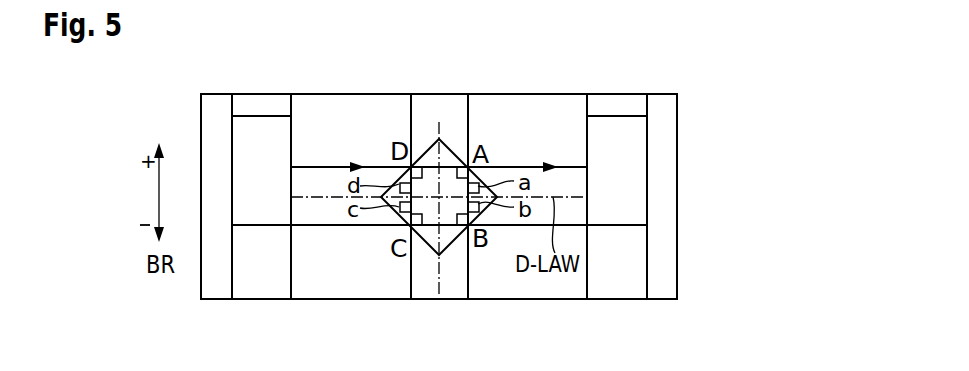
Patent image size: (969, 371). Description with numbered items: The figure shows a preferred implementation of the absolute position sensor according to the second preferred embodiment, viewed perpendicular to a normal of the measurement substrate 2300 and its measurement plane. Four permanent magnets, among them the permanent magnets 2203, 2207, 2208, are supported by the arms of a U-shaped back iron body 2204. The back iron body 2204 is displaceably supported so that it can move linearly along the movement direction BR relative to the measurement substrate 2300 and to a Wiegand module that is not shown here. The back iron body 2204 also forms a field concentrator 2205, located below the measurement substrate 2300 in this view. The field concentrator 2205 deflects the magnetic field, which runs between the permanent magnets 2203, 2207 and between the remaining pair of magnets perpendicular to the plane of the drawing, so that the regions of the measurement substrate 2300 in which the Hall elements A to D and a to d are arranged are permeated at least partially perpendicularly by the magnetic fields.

The permanent magnet 2203 is at (647, 135).
The U-shaped back iron body 2204 is at (677, 178).
The field concentrator 2205 is at (468, 94).
The permanent magnet 2207 is at (256, 116).
The permanent magnet 2208 is at (260, 299).
The measurement substrate 2300 is at (450, 151).